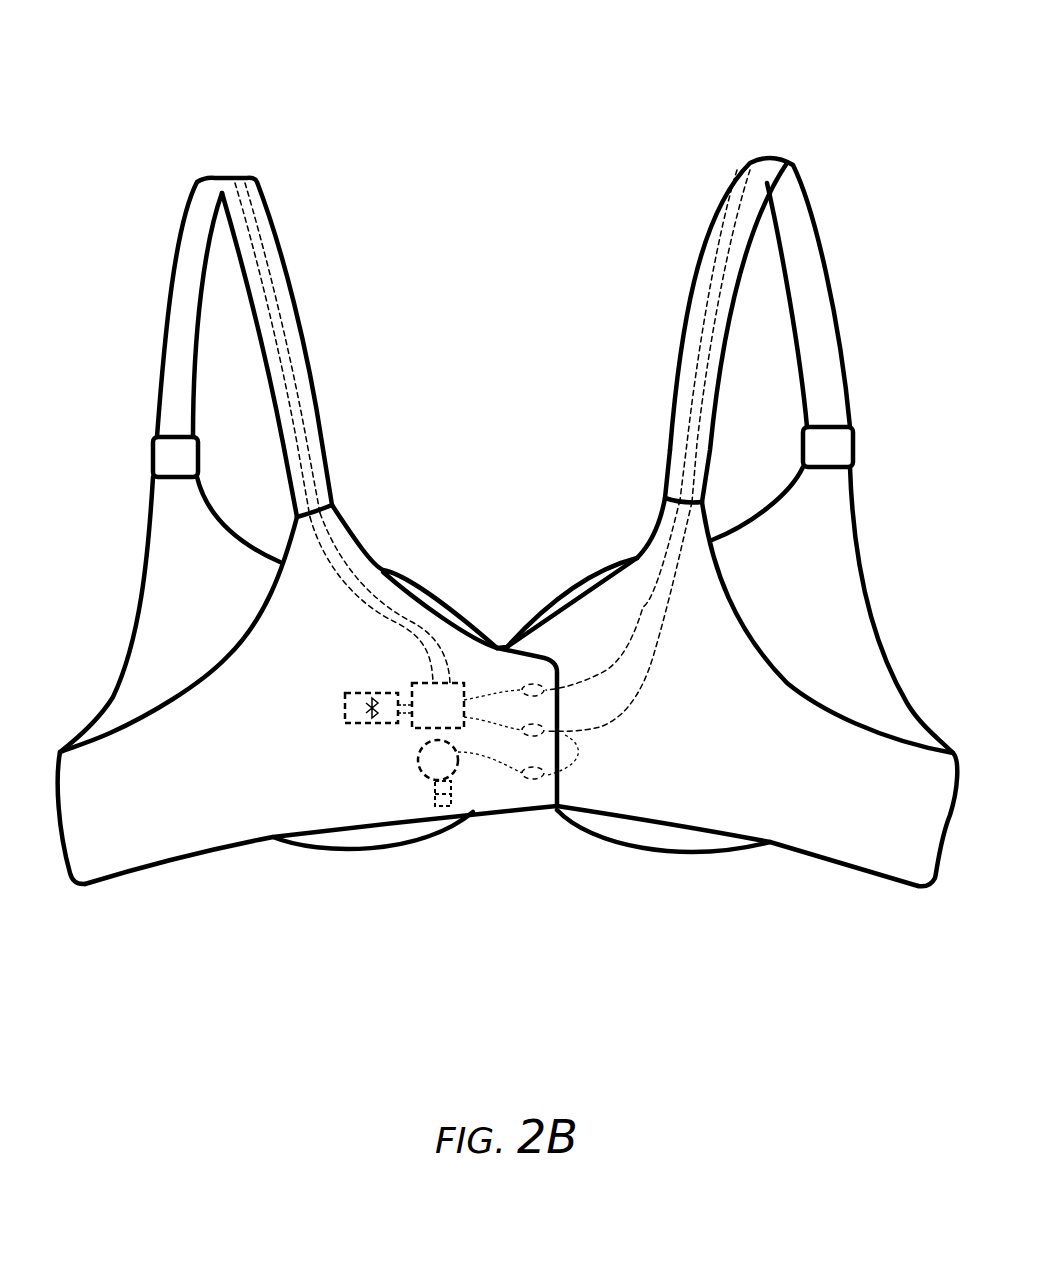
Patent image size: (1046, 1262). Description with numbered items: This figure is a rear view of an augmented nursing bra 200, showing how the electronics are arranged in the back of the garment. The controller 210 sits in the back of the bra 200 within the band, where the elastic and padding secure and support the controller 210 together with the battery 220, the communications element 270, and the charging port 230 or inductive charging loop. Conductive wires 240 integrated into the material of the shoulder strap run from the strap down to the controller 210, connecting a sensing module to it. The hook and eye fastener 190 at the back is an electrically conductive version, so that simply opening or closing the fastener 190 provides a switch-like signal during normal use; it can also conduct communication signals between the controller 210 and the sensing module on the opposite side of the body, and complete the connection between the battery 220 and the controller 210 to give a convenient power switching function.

The augmented nursing bra 200 is at (508, 487).
The conductive wires 240 is at (263, 231).
The controller 210 is at (448, 683).
The communications element 270 is at (345, 697).
The battery 220 is at (418, 762).
The charging port 230 is at (453, 806).
The hook and eye fastener 190 is at (556, 839).